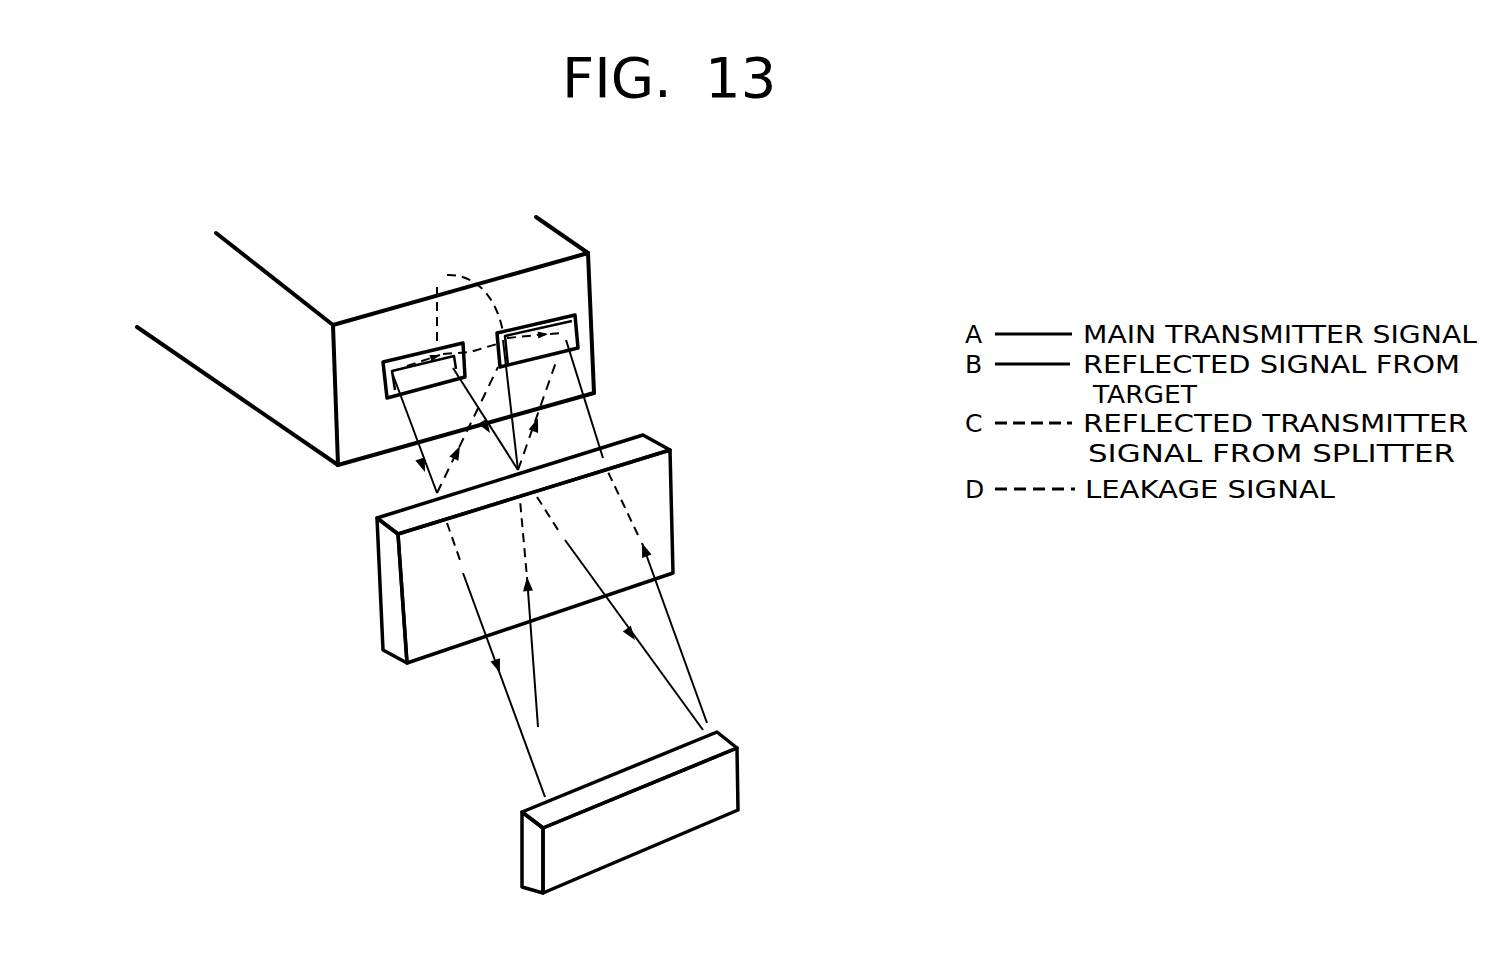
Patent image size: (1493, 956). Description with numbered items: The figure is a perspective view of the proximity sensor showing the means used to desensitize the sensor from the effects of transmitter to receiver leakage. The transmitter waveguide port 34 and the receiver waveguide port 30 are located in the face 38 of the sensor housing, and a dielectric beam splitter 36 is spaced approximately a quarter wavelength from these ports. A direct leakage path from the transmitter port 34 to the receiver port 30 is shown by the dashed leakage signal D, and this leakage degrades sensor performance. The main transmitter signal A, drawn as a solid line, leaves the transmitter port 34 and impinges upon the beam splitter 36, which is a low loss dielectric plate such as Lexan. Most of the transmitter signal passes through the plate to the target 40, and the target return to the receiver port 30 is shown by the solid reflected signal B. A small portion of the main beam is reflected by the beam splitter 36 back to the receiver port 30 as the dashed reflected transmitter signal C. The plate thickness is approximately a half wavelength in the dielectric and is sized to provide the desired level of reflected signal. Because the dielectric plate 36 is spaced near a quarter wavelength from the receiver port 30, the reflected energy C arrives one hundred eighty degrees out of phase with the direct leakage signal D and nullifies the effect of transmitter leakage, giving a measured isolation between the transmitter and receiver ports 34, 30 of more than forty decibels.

The receiver waveguide port 30 is at (557, 316).
The transmitter waveguide port 34 is at (380, 376).
The dielectric beam splitter 36 is at (380, 588).
The face of the sensor housing 38 is at (356, 441).
The target 40 is at (522, 852).
The main transmitter signal A is at (510, 710).
The reflected signal from target B is at (535, 648).
The reflected transmitter signal from splitter C is at (462, 481).
The leakage signal D is at (484, 312).